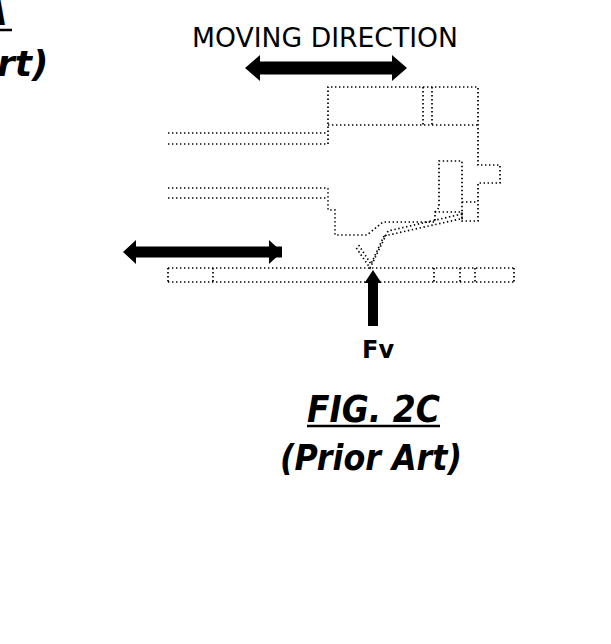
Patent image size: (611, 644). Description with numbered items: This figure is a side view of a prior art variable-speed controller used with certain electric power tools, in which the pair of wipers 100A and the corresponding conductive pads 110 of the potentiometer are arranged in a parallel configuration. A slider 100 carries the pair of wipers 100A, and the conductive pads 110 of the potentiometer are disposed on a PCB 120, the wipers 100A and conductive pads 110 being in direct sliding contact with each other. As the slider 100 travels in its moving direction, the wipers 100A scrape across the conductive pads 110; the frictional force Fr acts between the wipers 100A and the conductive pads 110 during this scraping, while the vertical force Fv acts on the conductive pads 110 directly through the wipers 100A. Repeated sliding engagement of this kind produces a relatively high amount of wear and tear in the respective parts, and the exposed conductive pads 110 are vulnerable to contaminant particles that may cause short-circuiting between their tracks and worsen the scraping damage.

The slider 100 is at (163, 170).
The wipers 100A is at (400, 232).
The conductive pads 110 is at (363, 268).
The PCB 120 is at (180, 272).